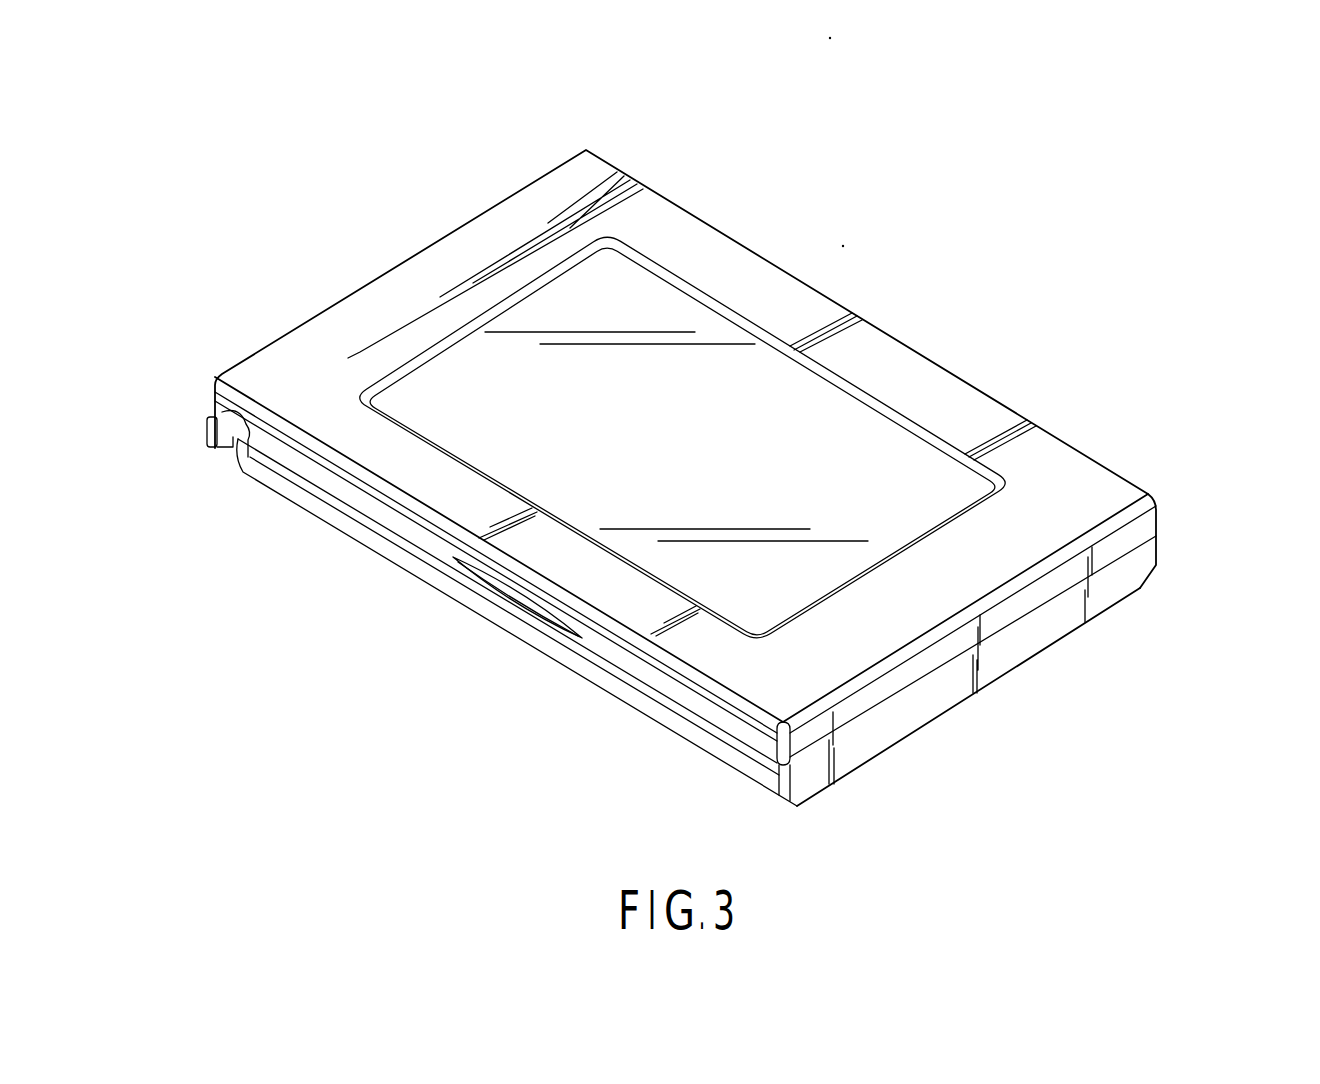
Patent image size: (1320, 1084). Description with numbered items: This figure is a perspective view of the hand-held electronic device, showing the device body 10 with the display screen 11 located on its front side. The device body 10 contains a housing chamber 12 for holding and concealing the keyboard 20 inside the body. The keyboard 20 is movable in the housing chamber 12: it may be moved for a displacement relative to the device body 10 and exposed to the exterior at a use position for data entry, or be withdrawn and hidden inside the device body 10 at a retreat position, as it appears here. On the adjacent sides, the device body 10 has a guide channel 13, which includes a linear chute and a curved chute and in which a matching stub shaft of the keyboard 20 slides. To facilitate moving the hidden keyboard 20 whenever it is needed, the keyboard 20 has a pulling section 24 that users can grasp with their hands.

The device body 10 is at (1097, 428).
The display screen 11 is at (850, 427).
The housing chamber 12 is at (677, 697).
The guide channel 13 is at (208, 426).
The keyboard 20 is at (280, 482).
The pulling section 24 is at (510, 597).